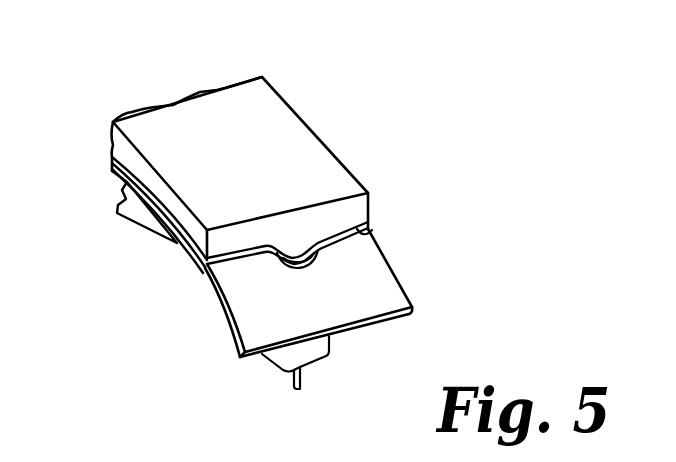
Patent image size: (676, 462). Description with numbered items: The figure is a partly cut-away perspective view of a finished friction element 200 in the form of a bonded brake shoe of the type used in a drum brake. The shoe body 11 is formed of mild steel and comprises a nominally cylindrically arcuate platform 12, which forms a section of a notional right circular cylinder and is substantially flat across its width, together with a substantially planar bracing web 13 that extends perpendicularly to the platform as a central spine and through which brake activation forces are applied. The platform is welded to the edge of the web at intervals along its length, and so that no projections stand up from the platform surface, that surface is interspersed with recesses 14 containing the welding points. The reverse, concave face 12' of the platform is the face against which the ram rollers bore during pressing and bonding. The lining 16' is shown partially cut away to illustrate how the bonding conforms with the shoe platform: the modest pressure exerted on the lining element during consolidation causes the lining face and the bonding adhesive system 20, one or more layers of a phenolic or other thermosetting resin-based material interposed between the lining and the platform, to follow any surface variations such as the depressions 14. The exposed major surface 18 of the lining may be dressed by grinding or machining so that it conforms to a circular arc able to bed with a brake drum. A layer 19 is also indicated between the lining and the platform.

The shoe body 11 is at (358, 343).
The platform 12 is at (309, 315).
The concave face of the platform 12' is at (167, 290).
The bracing web 13 is at (285, 372).
The recesses 14 is at (292, 265).
The lining 16' is at (240, 139).
The major surface 18 is at (210, 110).
The intermediate layer 19 is at (350, 213).
The bonding adhesive system 20 is at (368, 229).
The friction element 200 is at (185, 293).